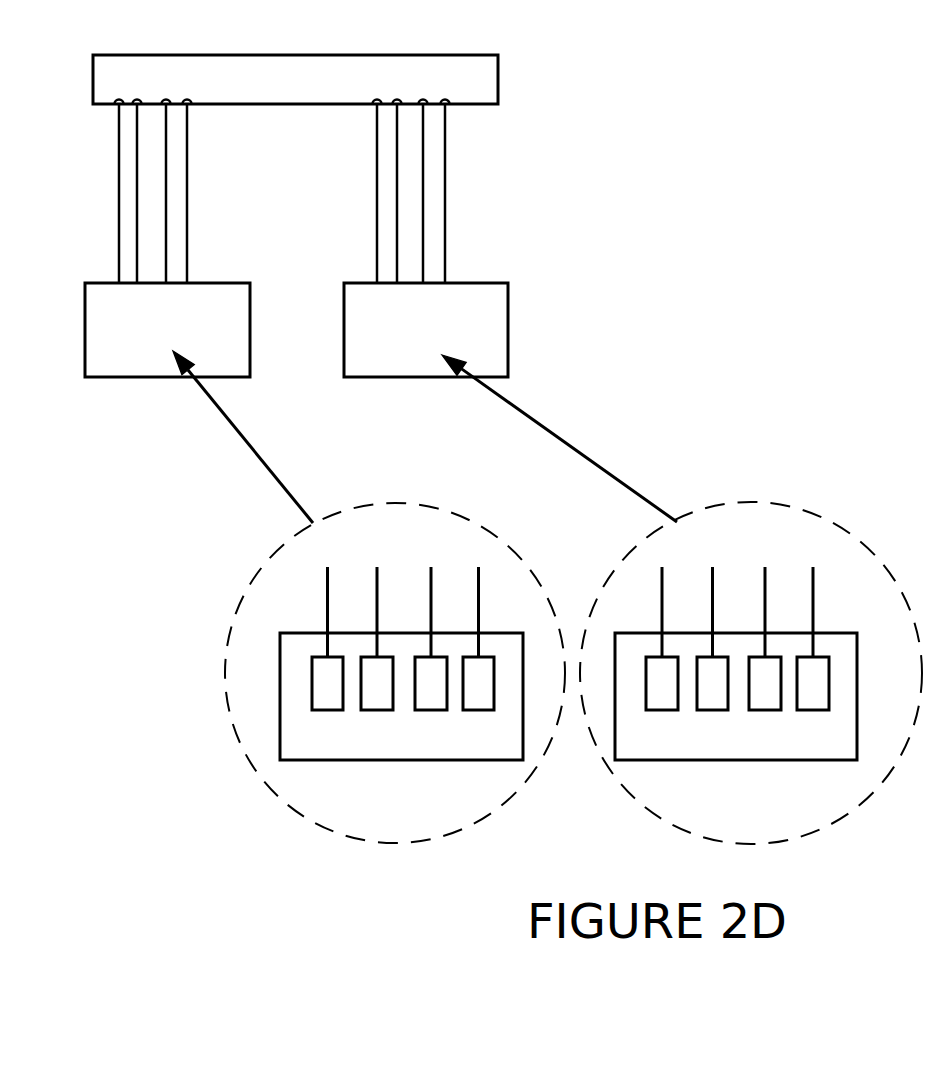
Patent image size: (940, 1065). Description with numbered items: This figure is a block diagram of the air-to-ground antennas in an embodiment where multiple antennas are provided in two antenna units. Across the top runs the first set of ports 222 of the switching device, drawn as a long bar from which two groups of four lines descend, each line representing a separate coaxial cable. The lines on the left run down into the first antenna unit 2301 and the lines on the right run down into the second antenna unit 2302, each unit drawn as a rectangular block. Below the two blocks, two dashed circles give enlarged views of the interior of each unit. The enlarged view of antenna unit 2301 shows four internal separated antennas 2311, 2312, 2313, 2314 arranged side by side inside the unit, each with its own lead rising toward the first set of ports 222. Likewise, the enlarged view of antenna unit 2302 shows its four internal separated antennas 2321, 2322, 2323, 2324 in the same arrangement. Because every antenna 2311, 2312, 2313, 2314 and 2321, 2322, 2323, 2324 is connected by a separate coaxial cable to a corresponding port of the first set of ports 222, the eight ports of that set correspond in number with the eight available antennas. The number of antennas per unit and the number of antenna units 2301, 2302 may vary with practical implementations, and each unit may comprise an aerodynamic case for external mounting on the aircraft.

The first set of ports 222 is at (245, 53).
The antenna unit 2301 is at (223, 283).
The antenna unit 2302 is at (482, 283).
The antenna 2311 is at (332, 698).
The antenna 2312 is at (378, 690).
The antenna 2313 is at (433, 685).
The antenna 2314 is at (472, 685).
The antenna 2321 is at (668, 692).
The antenna 2322 is at (713, 683).
The antenna 2323 is at (770, 678).
The antenna 2324 is at (808, 678).